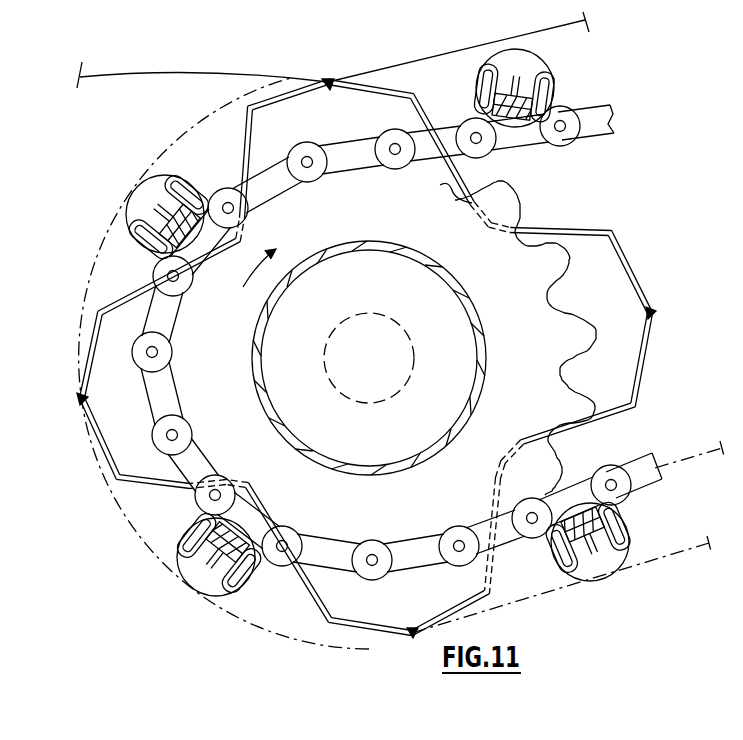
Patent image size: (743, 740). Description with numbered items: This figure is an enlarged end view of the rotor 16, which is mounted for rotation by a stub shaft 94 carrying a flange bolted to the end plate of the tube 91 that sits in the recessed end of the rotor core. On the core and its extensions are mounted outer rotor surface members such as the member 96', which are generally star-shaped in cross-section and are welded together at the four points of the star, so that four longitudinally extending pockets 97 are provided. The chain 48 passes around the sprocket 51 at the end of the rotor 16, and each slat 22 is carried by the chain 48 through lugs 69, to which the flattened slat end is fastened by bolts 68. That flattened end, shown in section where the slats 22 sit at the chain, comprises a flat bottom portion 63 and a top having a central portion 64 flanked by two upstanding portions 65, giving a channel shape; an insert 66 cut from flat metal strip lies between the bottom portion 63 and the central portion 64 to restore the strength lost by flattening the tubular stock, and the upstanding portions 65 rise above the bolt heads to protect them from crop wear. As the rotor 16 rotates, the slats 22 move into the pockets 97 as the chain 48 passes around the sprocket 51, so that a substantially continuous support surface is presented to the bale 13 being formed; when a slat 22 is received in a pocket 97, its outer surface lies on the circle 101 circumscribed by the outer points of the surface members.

The completed bale 13 is at (305, 57).
The rotor 16 is at (621, 222).
The slat 22 is at (549, 58).
The chain 48 is at (607, 127).
The sprocket 51 is at (548, 300).
The flat bottom portion 63 is at (560, 108).
The central portion 64 is at (527, 100).
The upstanding portion 65 is at (552, 78).
The insert 66 is at (512, 108).
The bolt 68 is at (518, 95).
The lug 69 is at (562, 142).
The tube 91 is at (487, 351).
The stub shaft 94 is at (350, 395).
The outer rotor surface member 96' is at (669, 329).
The pocket 97 is at (485, 184).
The circle 101 is at (110, 488).